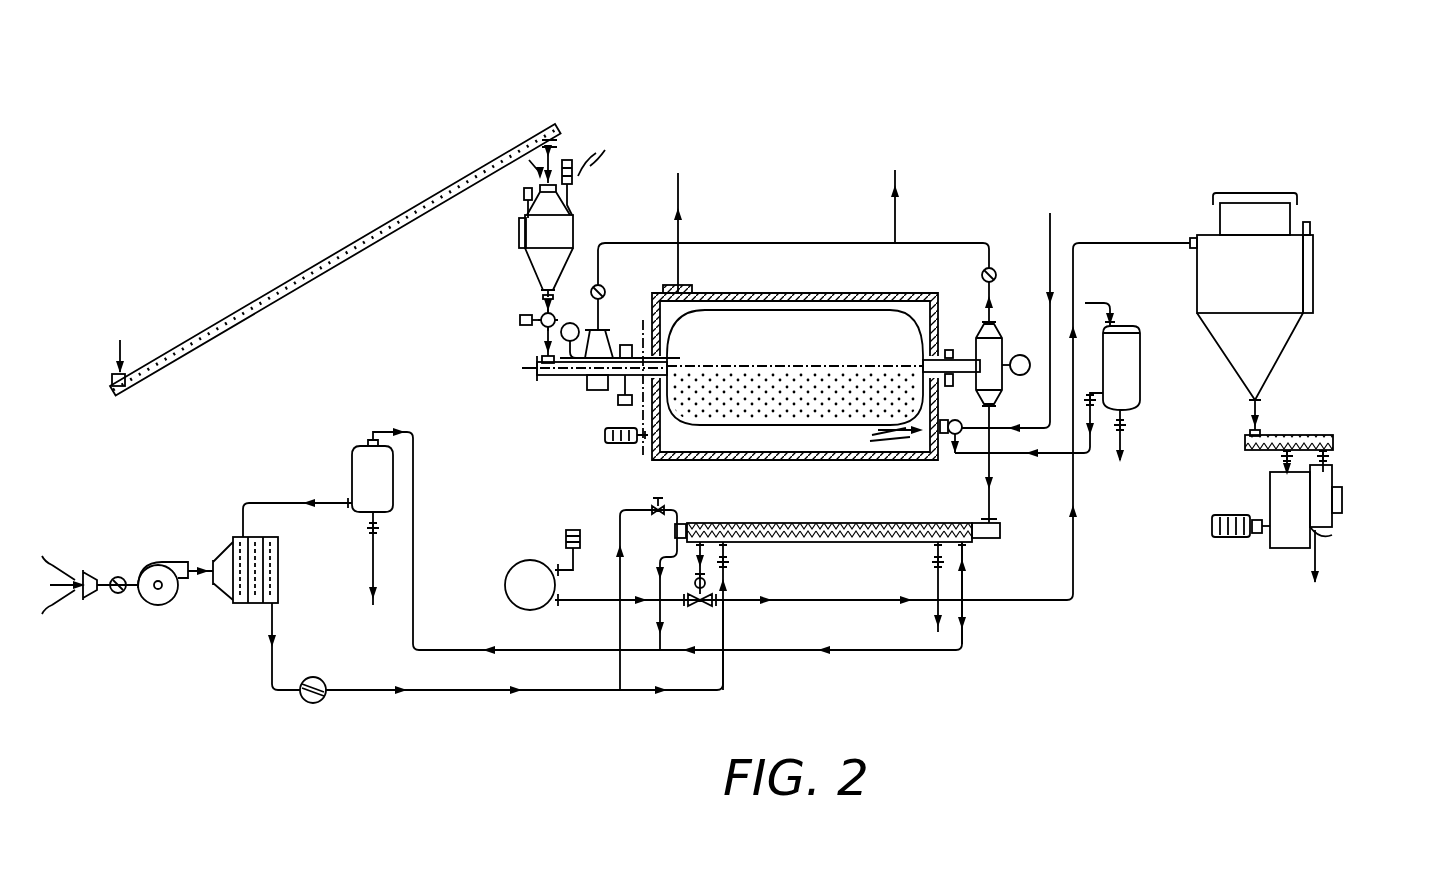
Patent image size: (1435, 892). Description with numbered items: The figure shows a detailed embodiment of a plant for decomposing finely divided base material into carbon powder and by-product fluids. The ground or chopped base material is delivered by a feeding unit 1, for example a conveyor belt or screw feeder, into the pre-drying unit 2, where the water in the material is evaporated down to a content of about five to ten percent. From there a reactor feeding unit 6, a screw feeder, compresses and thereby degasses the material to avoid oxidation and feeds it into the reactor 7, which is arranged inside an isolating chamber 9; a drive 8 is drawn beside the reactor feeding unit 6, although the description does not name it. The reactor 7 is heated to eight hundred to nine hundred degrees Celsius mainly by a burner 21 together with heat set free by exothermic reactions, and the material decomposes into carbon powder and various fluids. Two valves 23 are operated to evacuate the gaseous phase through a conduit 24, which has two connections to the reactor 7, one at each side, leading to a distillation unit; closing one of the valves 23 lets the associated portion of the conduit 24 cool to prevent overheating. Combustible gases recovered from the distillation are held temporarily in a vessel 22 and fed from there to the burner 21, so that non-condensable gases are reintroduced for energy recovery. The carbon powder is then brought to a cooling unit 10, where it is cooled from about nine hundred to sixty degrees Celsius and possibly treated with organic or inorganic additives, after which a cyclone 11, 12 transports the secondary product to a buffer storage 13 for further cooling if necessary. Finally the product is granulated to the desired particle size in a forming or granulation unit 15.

The feeding unit 1 is at (300, 276).
The pre-drying unit 2 is at (537, 238).
The reactor feeding unit 6 is at (563, 378).
The reactor 7 is at (795, 375).
The motor 8 is at (612, 444).
The isolating chamber 9 is at (795, 293).
The cooling unit 10 is at (868, 545).
The cyclone 11 is at (703, 606).
The cyclone 12 is at (523, 572).
The buffer storage 13 is at (1218, 242).
The forming or granulation unit 15 is at (1313, 485).
The burner 21 is at (962, 445).
The vessel 22 is at (1130, 390).
The valves 23 is at (598, 288).
The conduit 24 is at (943, 243).